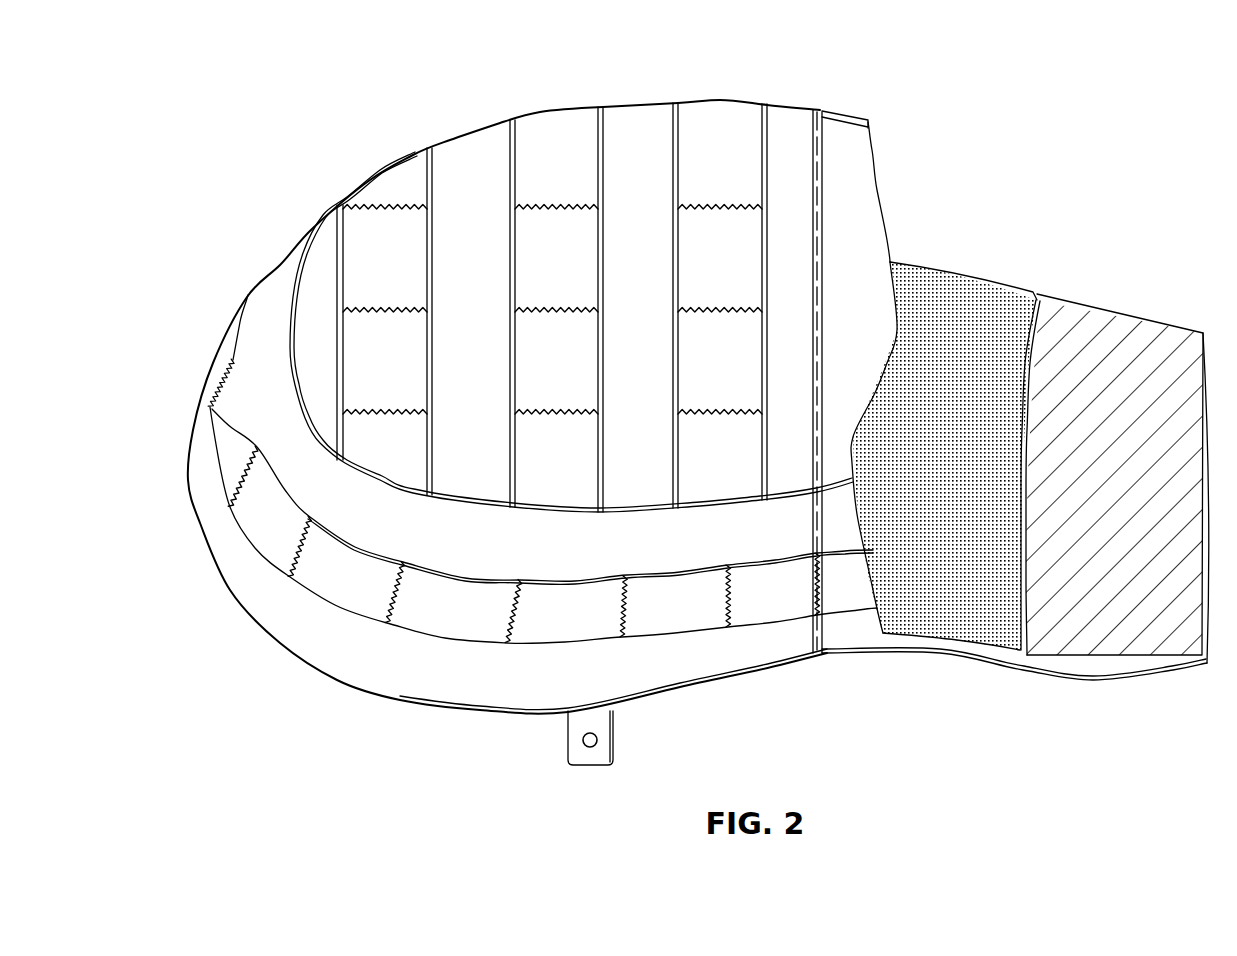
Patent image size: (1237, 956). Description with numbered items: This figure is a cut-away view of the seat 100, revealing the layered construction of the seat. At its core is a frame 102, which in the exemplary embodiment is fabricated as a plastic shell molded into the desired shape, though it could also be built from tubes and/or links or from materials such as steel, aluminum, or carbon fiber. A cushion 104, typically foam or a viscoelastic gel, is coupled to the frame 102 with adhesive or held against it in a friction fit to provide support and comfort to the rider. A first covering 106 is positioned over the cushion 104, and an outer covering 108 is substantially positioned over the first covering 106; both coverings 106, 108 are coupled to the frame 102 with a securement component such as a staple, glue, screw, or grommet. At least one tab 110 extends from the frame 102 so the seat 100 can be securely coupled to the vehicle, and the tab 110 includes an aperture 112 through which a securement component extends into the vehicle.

The seat 100 is at (1080, 100).
The frame 102 is at (1153, 645).
The cushion 104 is at (927, 273).
The first covering 106 is at (840, 533).
The outer covering 108 is at (642, 120).
The tab 110 is at (588, 760).
The aperture 112 is at (598, 738).